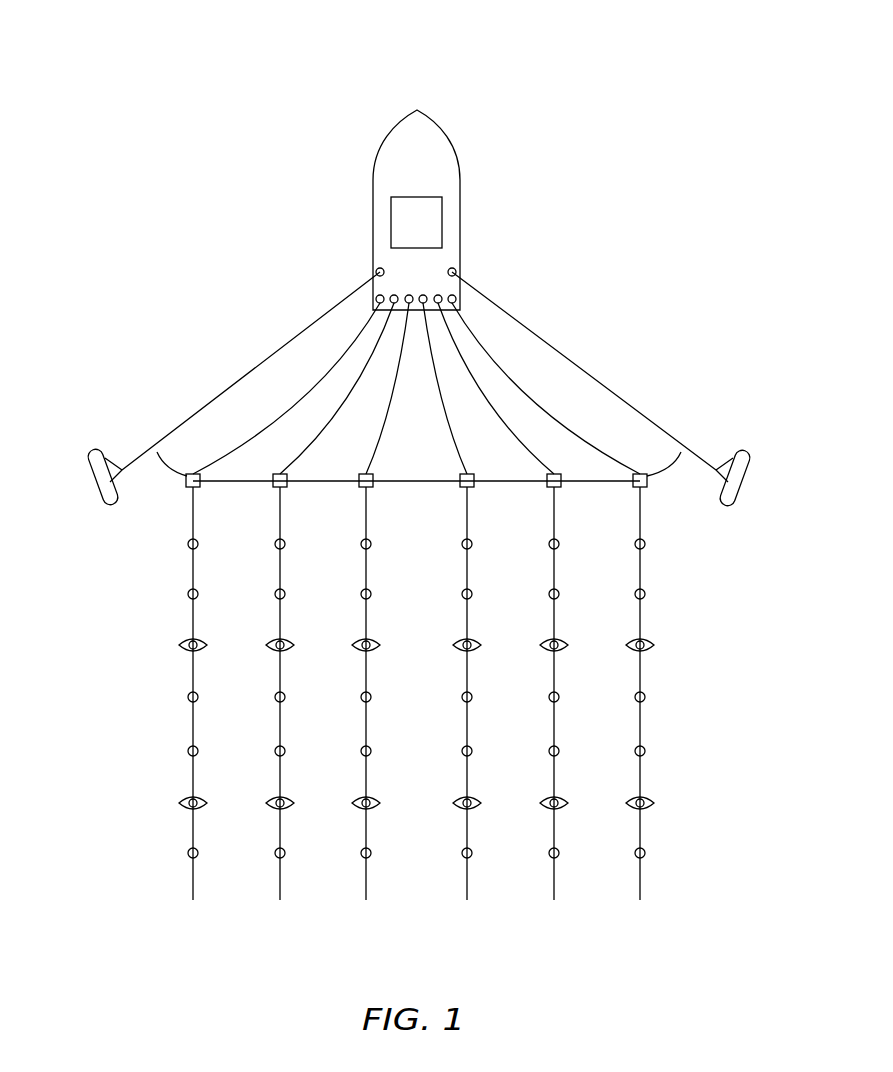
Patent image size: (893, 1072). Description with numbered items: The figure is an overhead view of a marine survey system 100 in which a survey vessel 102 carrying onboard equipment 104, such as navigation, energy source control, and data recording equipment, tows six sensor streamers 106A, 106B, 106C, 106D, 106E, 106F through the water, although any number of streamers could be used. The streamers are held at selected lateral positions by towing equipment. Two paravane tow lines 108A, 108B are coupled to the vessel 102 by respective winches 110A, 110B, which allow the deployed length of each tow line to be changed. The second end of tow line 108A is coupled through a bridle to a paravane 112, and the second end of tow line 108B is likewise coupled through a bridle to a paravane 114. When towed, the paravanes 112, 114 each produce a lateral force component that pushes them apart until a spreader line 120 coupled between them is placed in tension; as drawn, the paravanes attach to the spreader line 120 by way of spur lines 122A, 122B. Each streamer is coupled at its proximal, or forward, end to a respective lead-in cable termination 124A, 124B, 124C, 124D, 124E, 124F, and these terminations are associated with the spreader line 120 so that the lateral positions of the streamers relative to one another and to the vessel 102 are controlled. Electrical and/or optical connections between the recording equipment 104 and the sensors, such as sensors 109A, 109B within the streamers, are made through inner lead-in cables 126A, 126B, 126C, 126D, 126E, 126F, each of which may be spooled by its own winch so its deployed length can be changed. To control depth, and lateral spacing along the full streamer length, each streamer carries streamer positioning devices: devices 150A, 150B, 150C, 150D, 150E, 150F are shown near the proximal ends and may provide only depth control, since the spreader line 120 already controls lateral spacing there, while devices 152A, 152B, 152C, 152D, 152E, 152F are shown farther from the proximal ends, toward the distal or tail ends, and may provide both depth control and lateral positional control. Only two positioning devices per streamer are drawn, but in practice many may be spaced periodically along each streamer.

The marine survey system 100 is at (230, 68).
The survey vessel 102 is at (376, 168).
The onboard equipment 104 is at (443, 212).
The sensor streamer 106A is at (190, 892).
The sensor streamer 106B is at (278, 890).
The sensor streamer 106C is at (364, 890).
The sensor streamer 106D is at (465, 890).
The sensor streamer 106E is at (551, 890).
The sensor streamer 106F is at (643, 890).
The paravane tow line 108A is at (352, 292).
The paravane tow line 108B is at (568, 360).
The sensor 109A is at (188, 548).
The sensor 109B is at (188, 596).
The winch 110A is at (377, 268).
The winch 110B is at (455, 266).
The paravane 112 is at (100, 505).
The paravane 114 is at (746, 453).
The spreader line 120 is at (390, 480).
The spur line 122A is at (173, 472).
The spur line 122B is at (667, 478).
The lead-in cable termination 124A is at (196, 489).
The lead-in cable termination 124B is at (283, 489).
The lead-in cable termination 124C is at (369, 489).
The lead-in cable termination 124D is at (470, 489).
The lead-in cable termination 124E is at (557, 489).
The lead-in cable termination 124F is at (645, 488).
The inner lead-in cable 126A is at (345, 342).
The inner lead-in cable 126B is at (355, 378).
The inner lead-in cable 126C is at (383, 418).
The inner lead-in cable 126D is at (437, 345).
The inner lead-in cable 126E is at (477, 360).
The inner lead-in cable 126F is at (563, 405).
The streamer positioning device 150A is at (182, 650).
The streamer positioning device 150B is at (272, 652).
The streamer positioning device 150C is at (359, 652).
The streamer positioning device 150D is at (460, 652).
The streamer positioning device 150E is at (547, 652).
The streamer positioning device 150F is at (633, 652).
The streamer positioning device 152A is at (183, 808).
The streamer positioning device 152B is at (272, 810).
The streamer positioning device 152C is at (359, 810).
The streamer positioning device 152D is at (460, 810).
The streamer positioning device 152E is at (547, 810).
The streamer positioning device 152F is at (633, 810).